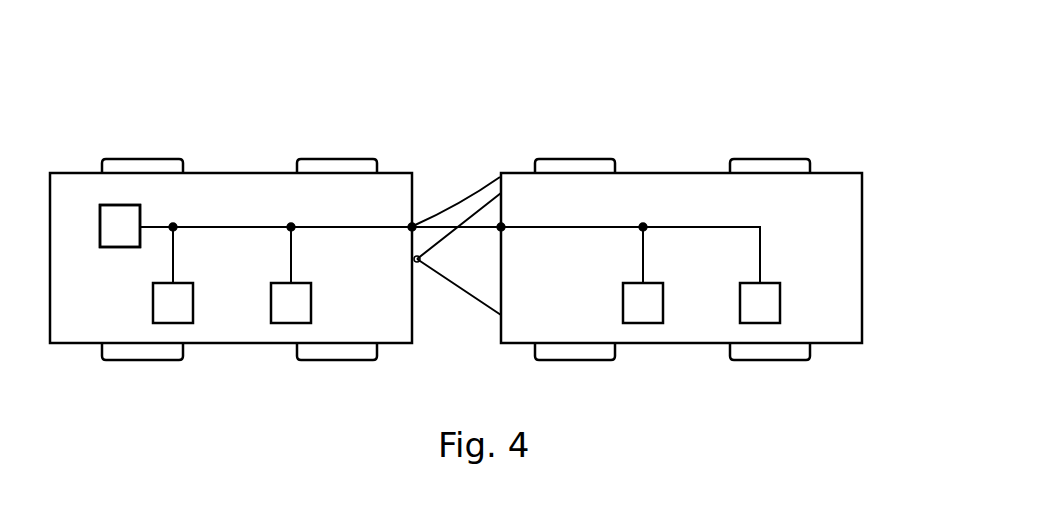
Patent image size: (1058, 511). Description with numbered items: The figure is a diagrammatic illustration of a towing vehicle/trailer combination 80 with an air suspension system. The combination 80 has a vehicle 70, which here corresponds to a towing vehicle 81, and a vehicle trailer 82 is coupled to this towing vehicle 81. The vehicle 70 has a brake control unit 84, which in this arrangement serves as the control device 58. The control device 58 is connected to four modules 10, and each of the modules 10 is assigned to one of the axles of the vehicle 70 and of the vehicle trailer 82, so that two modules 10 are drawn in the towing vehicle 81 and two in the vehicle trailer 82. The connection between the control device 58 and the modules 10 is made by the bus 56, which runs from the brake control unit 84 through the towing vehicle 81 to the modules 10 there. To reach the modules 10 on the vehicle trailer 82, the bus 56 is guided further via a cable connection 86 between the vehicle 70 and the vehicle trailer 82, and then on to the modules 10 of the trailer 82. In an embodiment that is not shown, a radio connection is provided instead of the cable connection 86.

The towing vehicle/trailer combination 80 is at (808, 80).
The towing vehicle 81 is at (208, 173).
The vehicle trailer 82 is at (862, 211).
The brake control unit 84 is at (122, 205).
The control device 58 is at (120, 247).
The bus 56 is at (241, 225).
The vehicle 70 is at (413, 188).
The cable connection 86 is at (478, 200).
The module 10 is at (185, 323).